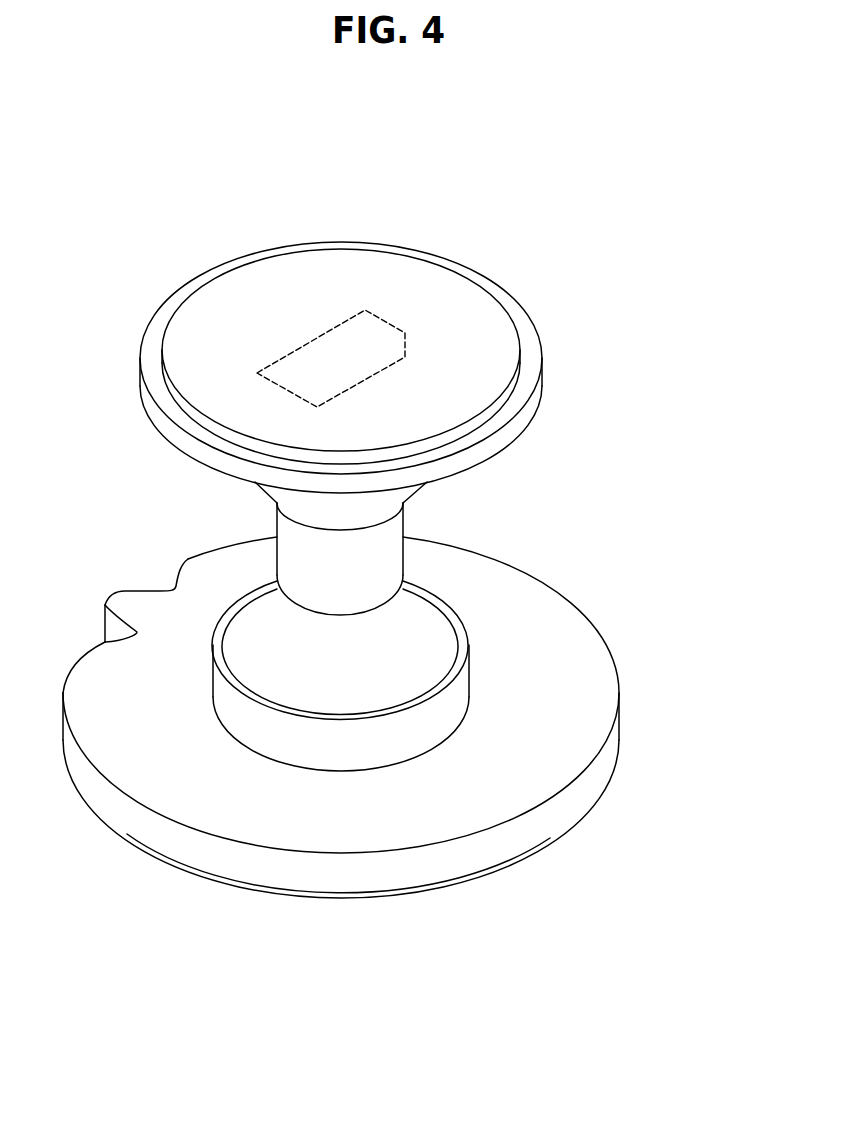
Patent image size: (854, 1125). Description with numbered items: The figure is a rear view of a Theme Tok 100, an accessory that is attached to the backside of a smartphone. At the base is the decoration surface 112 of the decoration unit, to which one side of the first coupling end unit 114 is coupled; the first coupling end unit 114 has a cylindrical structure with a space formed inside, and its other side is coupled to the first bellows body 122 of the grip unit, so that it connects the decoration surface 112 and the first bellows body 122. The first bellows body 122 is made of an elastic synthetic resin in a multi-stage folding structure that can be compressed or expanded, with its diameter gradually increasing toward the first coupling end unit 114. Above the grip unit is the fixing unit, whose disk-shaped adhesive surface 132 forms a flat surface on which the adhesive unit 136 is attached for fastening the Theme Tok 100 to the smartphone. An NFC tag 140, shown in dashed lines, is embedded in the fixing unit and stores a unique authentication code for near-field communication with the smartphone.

The Theme Tok 100 is at (131, 218).
The decoration surface 112 is at (603, 765).
The first coupling end unit 114 is at (458, 693).
The first bellows body 122 is at (422, 618).
The adhesive surface 132 is at (524, 331).
The adhesive unit 136 is at (387, 275).
The NFC tag 140 is at (313, 340).